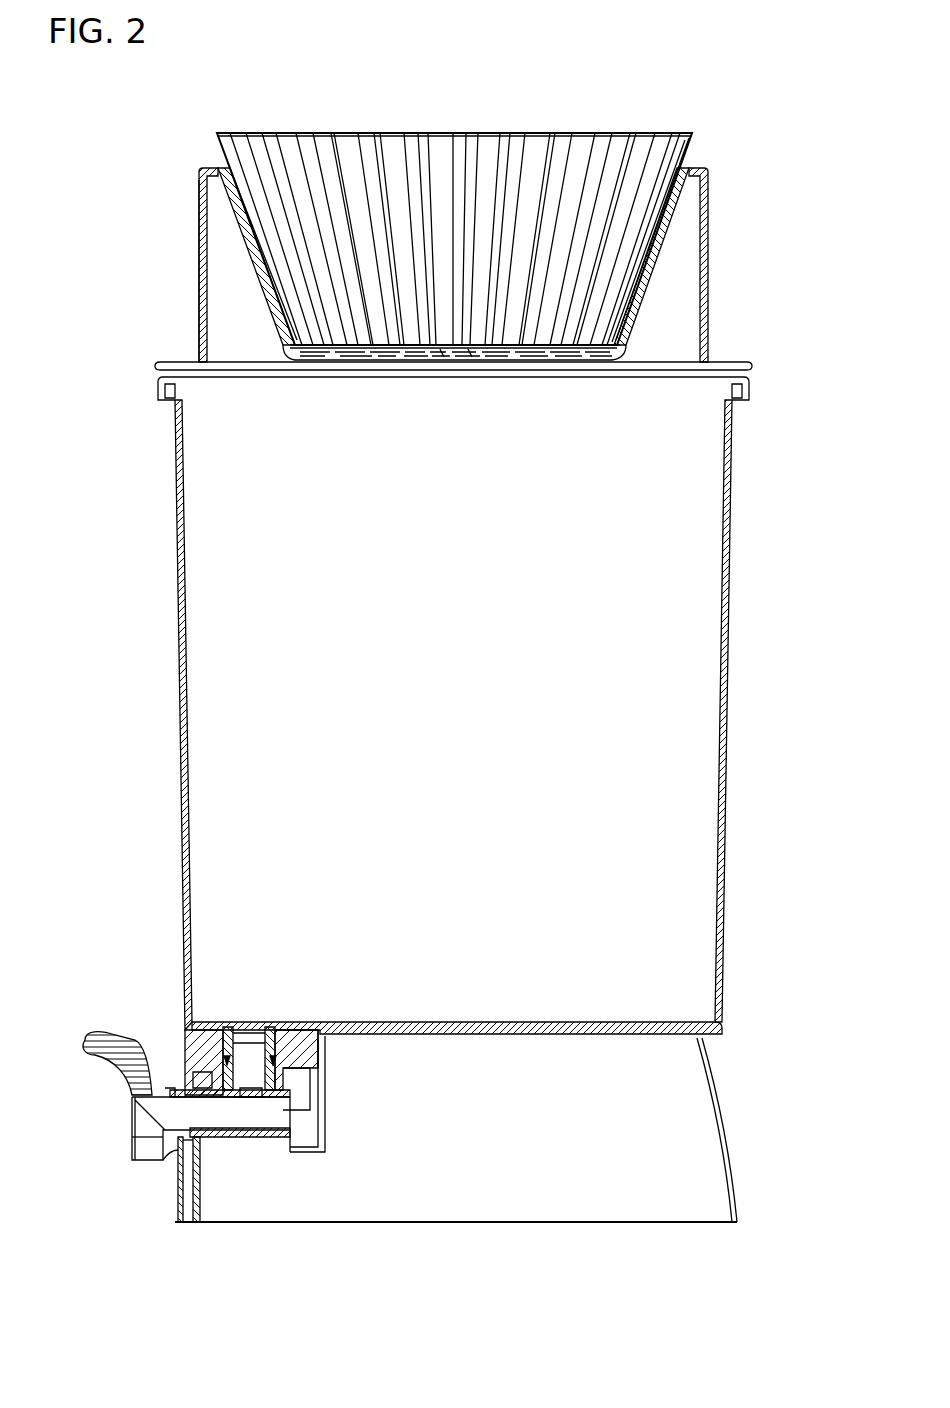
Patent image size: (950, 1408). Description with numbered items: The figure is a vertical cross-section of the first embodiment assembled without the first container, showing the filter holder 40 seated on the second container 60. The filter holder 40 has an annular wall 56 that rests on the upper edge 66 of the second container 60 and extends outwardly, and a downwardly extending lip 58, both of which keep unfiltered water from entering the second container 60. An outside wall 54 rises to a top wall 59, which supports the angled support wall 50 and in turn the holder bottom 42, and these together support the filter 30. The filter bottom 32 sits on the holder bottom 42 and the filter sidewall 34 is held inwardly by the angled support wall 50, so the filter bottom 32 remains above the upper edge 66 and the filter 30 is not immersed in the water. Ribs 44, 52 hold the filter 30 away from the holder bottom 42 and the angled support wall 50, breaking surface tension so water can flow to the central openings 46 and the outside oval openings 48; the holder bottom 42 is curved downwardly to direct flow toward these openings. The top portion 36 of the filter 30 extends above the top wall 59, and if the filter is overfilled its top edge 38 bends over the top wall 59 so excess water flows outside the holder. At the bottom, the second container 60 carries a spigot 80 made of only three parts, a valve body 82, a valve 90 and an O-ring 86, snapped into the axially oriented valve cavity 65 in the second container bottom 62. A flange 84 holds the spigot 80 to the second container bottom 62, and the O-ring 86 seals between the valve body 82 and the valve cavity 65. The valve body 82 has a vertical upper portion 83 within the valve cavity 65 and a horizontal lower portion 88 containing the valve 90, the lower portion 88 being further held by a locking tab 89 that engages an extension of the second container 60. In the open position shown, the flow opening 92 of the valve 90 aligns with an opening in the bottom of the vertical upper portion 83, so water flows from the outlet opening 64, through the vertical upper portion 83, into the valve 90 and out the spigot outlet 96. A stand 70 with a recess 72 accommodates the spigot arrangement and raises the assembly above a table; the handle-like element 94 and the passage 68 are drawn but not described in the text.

The filter 30 is at (628, 128).
The filter bottom 32 is at (585, 360).
The filter sidewall 34 is at (656, 243).
The top portion of filter 36 is at (688, 152).
The top edge of filter 38 is at (693, 135).
The filter holder 40 is at (412, 243).
The holder bottom 42 is at (302, 358).
The ribs 44 is at (428, 358).
The central openings 46 is at (478, 360).
The outside oval openings 48 is at (512, 358).
The angled support wall 50 is at (243, 262).
The ribs 52 is at (237, 195).
The outside wall 54 is at (199, 205).
The annular wall 56 is at (170, 366).
The downwardly extending lip 58 is at (155, 388).
The top wall 59 is at (210, 170).
The second container 60 is at (464, 705).
The second container bottom 62 is at (625, 1035).
The outlet opening 64 is at (240, 1040).
The valve cavity 65 is at (226, 1045).
The upper edge 66 is at (735, 378).
The valve passage 68 is at (175, 1098).
The stand 70 is at (511, 1165).
The recess 72 is at (300, 1160).
The spigot 80 is at (130, 1138).
The valve body 82 is at (277, 1058).
The vertical upper portion 83 is at (288, 1035).
The flange 84 is at (268, 1027).
The O-ring 86 is at (280, 1045).
The horizontal lower portion 88 is at (215, 1140).
The locking tab 89 is at (300, 1120).
The valve 90 is at (200, 1100).
The flow opening 92 is at (245, 1100).
The handle 94 is at (118, 1052).
The spigot outlet 96 is at (135, 1155).